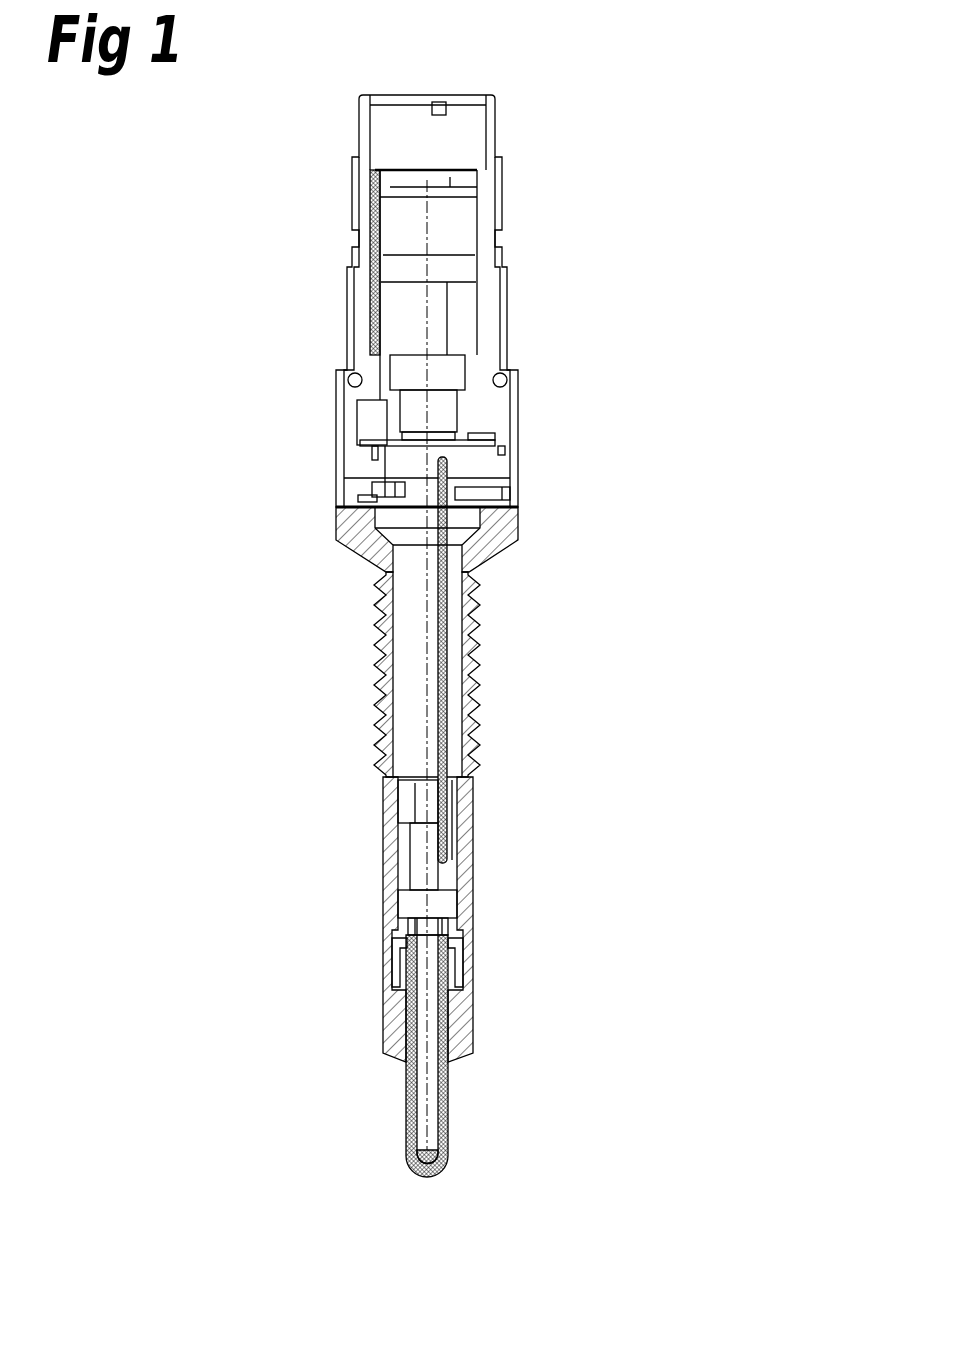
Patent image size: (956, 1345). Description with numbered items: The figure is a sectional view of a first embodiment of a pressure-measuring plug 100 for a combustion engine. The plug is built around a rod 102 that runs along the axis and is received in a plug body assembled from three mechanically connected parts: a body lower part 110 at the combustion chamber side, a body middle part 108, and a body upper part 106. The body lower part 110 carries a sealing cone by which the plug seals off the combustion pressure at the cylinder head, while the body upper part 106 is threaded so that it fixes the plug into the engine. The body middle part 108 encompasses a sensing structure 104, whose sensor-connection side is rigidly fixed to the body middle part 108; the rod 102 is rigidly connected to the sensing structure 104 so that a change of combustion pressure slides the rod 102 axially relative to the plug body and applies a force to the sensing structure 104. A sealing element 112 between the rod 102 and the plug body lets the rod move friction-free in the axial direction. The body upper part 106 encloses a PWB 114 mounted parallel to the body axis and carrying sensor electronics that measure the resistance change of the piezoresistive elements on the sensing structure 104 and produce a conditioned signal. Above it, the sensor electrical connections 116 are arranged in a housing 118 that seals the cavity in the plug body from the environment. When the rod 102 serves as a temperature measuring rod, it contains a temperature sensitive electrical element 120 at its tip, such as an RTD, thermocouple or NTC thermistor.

The pressure-measuring plug 100 is at (596, 523).
The rod 102 is at (448, 1155).
The sensing structure 104 is at (432, 882).
The body upper part 106 is at (479, 712).
The body middle part 108 is at (474, 908).
The body lower part 110 is at (475, 999).
The sealing element 112 is at (452, 950).
The PWB 114 is at (447, 637).
The sensor electrical connections 116 is at (450, 220).
The housing 118 is at (504, 323).
The temperature sensitive electrical element 120 is at (413, 1174).